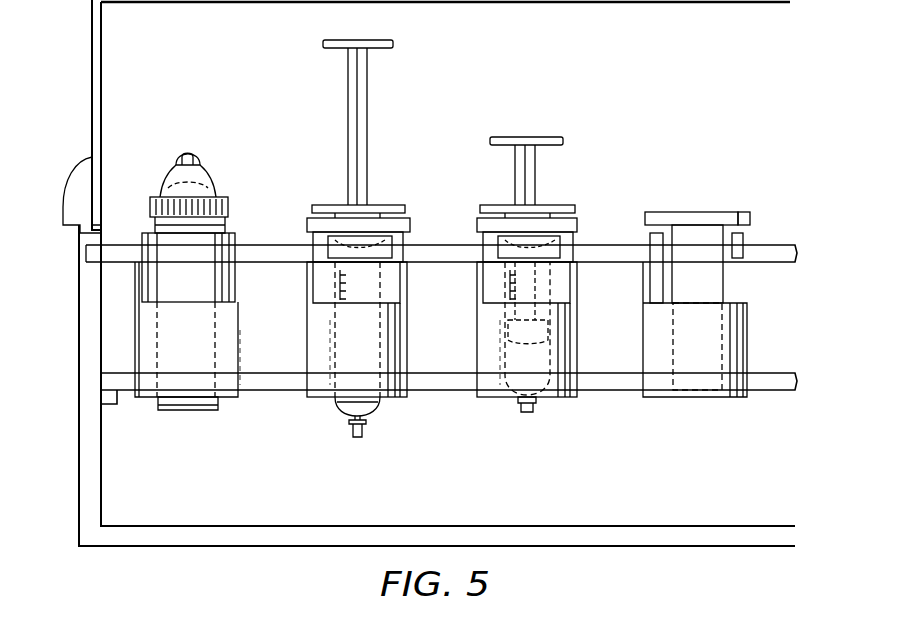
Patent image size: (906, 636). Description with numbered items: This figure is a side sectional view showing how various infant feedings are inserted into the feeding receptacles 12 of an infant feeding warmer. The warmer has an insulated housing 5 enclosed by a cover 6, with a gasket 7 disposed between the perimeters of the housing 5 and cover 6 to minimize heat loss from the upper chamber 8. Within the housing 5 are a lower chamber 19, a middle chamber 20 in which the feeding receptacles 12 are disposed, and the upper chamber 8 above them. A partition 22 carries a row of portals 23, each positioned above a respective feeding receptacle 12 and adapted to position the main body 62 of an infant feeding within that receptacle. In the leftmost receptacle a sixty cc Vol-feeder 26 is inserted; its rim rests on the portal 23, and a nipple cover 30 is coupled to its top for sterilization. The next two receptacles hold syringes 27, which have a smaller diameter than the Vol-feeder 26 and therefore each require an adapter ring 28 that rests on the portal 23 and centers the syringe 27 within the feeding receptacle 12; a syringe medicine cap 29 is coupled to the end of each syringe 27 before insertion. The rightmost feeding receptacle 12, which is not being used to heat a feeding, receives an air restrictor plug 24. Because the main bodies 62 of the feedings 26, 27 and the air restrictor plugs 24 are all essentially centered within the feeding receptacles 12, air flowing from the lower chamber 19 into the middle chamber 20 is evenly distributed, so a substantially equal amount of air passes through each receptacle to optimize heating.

The housing 5 is at (78, 505).
The cover 6 is at (92, 70).
The gasket 7 is at (80, 238).
The upper chamber 8 is at (647, 100).
The feeding receptacle 12 is at (147, 392).
The lower chamber 19 is at (652, 485).
The middle chamber 20 is at (738, 287).
The partition 22 is at (603, 243).
The portal 23 is at (745, 240).
The air restrictor plug 24 is at (712, 210).
The 60 cc Vol-feeder 26 is at (222, 278).
The syringe 27 is at (375, 412).
The adapter ring 28 is at (478, 224).
The syringe medicine cap 29 is at (350, 427).
The nipple cover 30 is at (190, 148).
The main body 62 is at (293, 333).